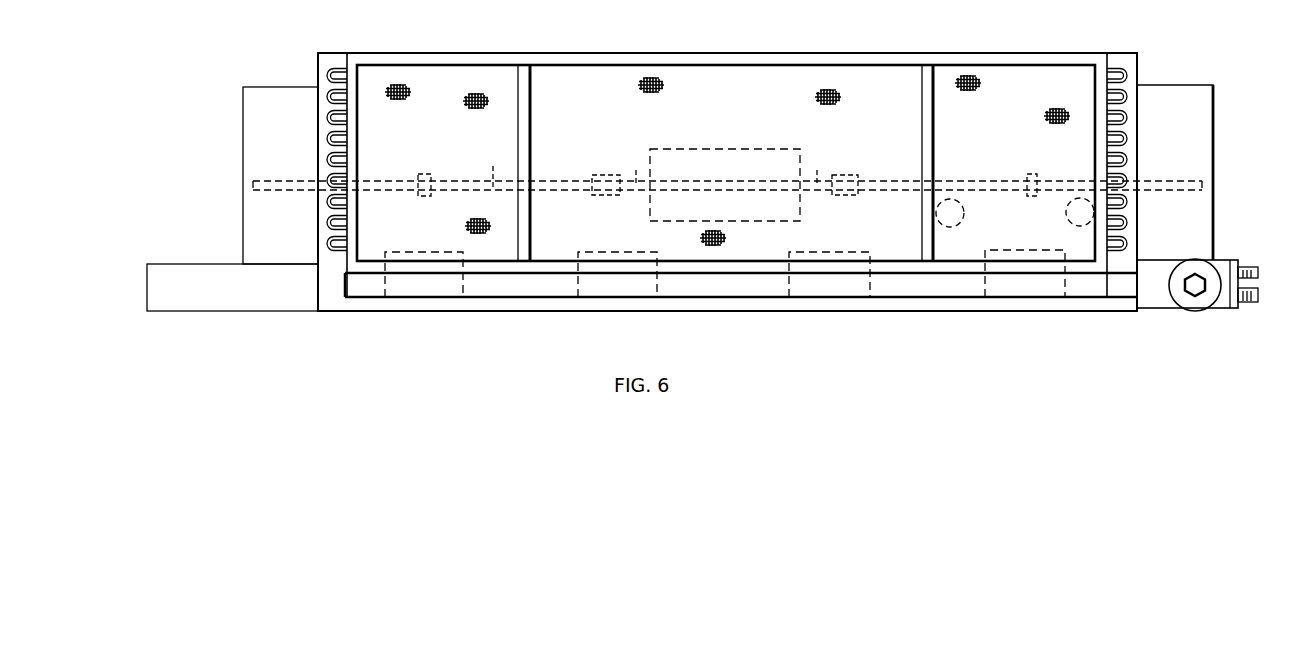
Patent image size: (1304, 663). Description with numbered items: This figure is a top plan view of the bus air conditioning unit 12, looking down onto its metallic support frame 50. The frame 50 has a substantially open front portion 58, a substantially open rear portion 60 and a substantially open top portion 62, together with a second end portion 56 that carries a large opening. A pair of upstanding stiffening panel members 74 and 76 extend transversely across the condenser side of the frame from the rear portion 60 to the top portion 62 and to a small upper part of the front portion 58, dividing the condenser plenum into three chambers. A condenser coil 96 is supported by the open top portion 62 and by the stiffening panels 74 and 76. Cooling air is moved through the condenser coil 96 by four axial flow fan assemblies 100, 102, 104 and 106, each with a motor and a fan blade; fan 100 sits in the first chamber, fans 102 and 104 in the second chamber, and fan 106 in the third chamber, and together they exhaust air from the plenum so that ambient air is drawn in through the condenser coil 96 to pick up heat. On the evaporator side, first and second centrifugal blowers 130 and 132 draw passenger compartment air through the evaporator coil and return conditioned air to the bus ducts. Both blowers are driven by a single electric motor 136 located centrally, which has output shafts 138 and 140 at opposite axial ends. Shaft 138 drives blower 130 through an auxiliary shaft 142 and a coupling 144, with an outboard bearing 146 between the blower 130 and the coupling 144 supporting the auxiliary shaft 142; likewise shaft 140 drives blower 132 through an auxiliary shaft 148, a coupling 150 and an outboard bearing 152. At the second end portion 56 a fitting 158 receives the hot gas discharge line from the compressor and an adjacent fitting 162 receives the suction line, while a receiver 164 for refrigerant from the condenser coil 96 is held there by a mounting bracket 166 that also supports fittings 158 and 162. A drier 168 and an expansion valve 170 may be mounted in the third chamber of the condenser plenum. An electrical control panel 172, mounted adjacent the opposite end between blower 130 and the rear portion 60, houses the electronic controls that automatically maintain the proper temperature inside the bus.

The bus air conditioning unit 12 is at (168, 194).
The support frame 50 is at (318, 278).
The second end portion 56 is at (1137, 140).
The front portion 58 is at (800, 53).
The rear portion 60 is at (735, 311).
The top portion 62 is at (350, 311).
The stiffening panel member 74 is at (532, 78).
The stiffening panel member 76 is at (920, 78).
The condenser coil 96 is at (412, 65).
The axial flow fan assembly 100 is at (420, 252).
The axial flow fan assembly 102 is at (608, 252).
The axial flow fan assembly 104 is at (805, 252).
The axial flow fan assembly 106 is at (1032, 250).
The first centrifugal blower 130 is at (243, 103).
The second centrifugal blower 132 is at (1170, 85).
The electric motor 136 is at (733, 149).
The output shaft 138 is at (636, 170).
The output shaft 140 is at (817, 172).
The auxiliary shaft 142 is at (493, 170).
The coupling 144 is at (602, 175).
The outboard bearing 146 is at (422, 174).
The auxiliary shaft 148 is at (905, 194).
The coupling 150 is at (851, 175).
The outboard bearing 152 is at (1031, 174).
The fitting 158 is at (1250, 267).
The fitting 162 is at (1248, 302).
The receiver 164 is at (1189, 262).
The mounting bracket 166 is at (1222, 260).
The drier 168 is at (1066, 212).
The expansion valve 170 is at (952, 227).
The electrical control panel 172 is at (186, 264).